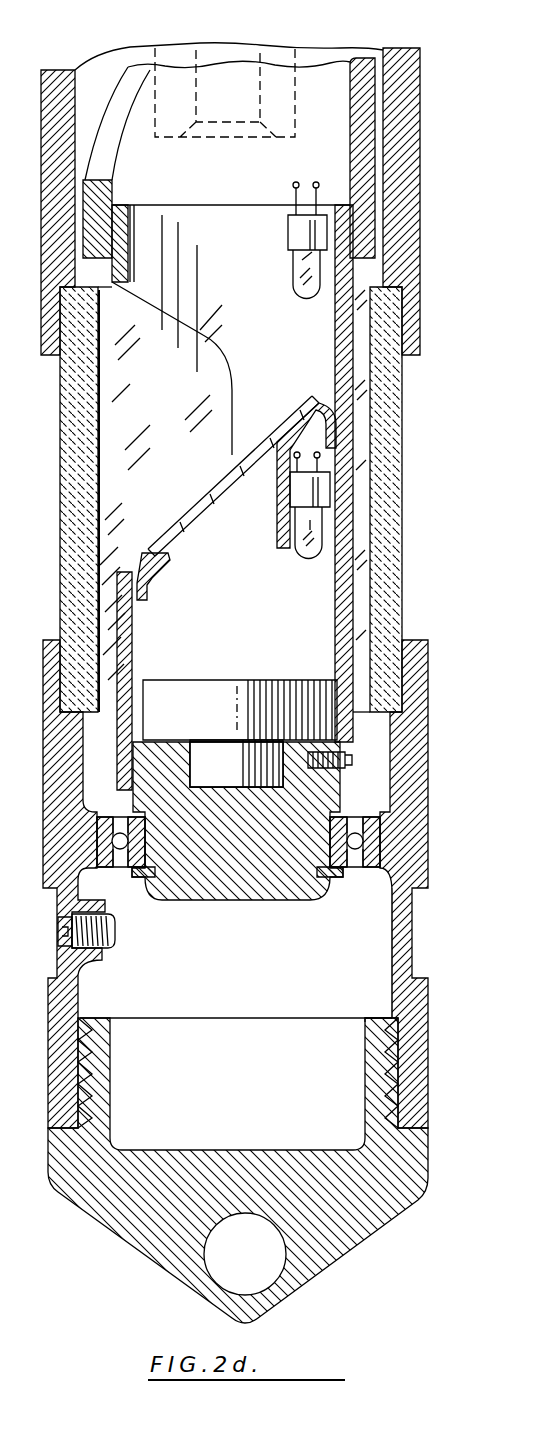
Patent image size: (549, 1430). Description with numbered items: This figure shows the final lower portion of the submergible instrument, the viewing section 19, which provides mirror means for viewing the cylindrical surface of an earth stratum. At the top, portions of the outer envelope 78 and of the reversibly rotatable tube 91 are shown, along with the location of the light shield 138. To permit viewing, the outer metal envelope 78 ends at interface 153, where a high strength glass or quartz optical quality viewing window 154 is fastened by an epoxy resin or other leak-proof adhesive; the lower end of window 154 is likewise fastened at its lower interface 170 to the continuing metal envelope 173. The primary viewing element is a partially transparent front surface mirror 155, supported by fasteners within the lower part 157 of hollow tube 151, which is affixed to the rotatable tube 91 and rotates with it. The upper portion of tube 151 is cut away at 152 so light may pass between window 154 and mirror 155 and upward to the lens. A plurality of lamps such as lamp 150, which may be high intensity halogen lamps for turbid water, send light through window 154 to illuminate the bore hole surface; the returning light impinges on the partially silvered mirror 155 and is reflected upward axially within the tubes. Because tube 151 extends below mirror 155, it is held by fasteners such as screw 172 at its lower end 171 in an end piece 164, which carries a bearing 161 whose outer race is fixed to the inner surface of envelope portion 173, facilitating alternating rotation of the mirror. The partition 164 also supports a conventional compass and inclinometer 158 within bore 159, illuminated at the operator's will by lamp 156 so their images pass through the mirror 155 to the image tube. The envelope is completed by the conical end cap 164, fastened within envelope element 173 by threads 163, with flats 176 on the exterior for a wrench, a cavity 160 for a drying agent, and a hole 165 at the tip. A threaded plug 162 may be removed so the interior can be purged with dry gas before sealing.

The viewing section 19 is at (250, 181).
The outer envelope 78 is at (418, 48).
The reversibly rotatable tube 91 is at (368, 56).
The light shield 138 is at (302, 62).
The lamp 150 is at (294, 282).
The hollow tube 151 is at (335, 334).
The cut-away opening 152 is at (234, 380).
The interface 153 is at (60, 357).
The viewing window 154 is at (100, 418).
The front surface mirror 155 is at (192, 512).
The lamp 156 is at (296, 560).
The lower part of hollow tube 157 is at (134, 642).
The compass and inclinometer 158 is at (283, 680).
The bore 159 is at (203, 740).
The cavity 160 is at (209, 1038).
The bearing 161 is at (366, 868).
The threaded plug 162 is at (116, 928).
The threads 163 is at (376, 1016).
The end piece 164 is at (248, 900).
The hole 165 is at (287, 1254).
The lower interface 170 is at (408, 645).
The lower end of tube 171 is at (336, 608).
The screw 172 is at (352, 766).
The metal envelope portion 173 is at (432, 868).
The flats 176 is at (414, 922).